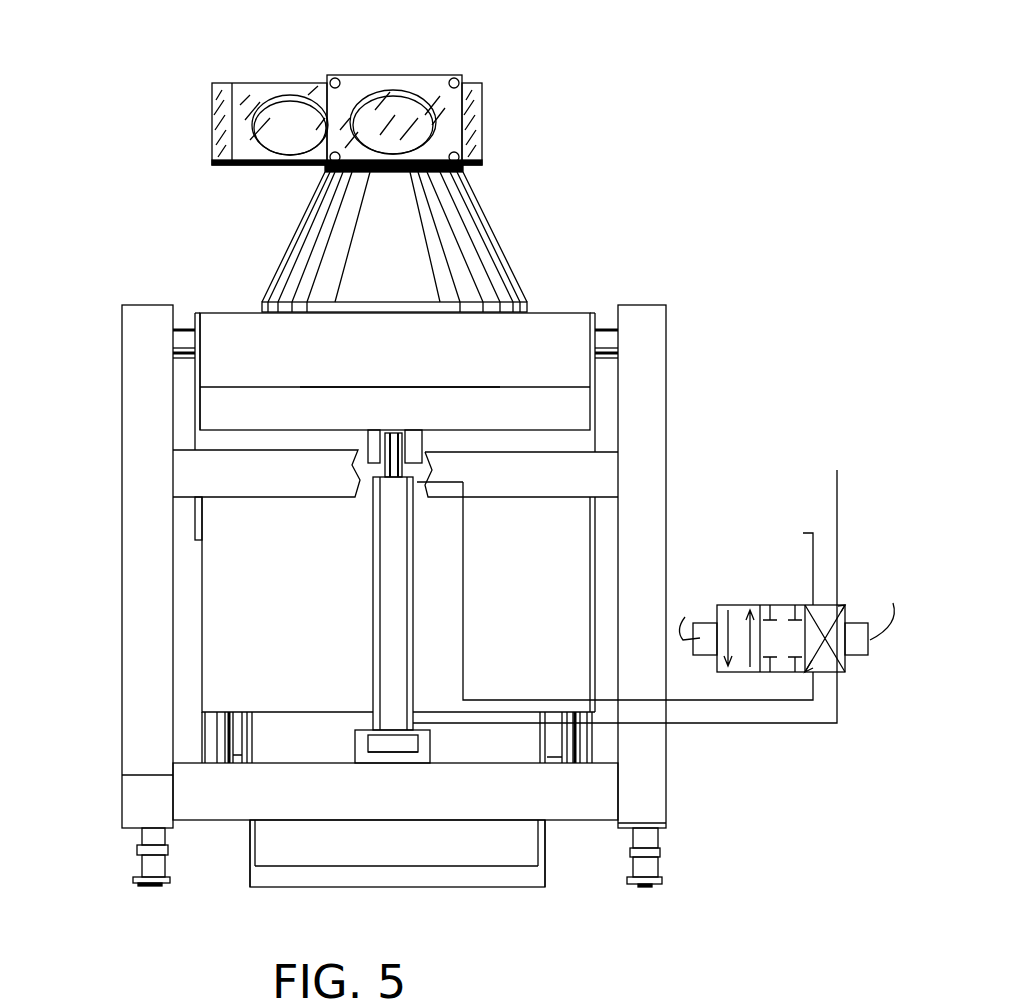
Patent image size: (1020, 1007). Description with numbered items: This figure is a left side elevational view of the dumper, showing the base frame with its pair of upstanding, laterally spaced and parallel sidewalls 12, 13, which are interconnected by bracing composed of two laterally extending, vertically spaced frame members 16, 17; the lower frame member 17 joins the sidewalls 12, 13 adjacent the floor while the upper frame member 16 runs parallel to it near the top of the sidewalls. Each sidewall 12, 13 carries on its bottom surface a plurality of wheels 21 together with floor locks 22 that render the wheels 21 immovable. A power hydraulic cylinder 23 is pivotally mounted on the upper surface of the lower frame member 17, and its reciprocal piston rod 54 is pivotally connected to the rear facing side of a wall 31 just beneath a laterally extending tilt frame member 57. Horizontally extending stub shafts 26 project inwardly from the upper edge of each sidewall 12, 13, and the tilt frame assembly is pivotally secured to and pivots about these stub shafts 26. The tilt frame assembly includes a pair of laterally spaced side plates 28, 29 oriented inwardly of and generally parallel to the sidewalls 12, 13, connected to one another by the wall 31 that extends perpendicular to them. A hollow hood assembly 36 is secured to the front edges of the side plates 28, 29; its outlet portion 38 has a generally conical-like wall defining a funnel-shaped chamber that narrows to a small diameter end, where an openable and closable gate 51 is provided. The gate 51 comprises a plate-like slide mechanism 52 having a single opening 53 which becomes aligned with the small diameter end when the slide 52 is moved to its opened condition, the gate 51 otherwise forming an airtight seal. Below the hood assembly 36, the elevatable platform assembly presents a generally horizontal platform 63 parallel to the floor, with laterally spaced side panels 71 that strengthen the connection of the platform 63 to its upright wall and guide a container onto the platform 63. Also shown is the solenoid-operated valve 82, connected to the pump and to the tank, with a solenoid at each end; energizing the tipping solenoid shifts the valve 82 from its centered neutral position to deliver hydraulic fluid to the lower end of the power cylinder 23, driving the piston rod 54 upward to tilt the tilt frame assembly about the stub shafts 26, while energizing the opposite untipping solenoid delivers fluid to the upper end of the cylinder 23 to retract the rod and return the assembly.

The sidewall 12 is at (125, 650).
The sidewall 13 is at (650, 548).
The frame member 16 is at (600, 462).
The frame member 17 is at (605, 787).
The wheels 21 is at (152, 890).
The floor locks 22 is at (148, 870).
The power hydraulic cylinder 23 is at (385, 625).
The stub shafts 26 is at (186, 340).
The side plate 28 is at (595, 398).
The side plate 29 is at (195, 382).
The wall 31 is at (395, 630).
The hood assembly 36 is at (508, 258).
The outlet portion 38 is at (470, 222).
The gate 51 is at (389, 75).
The slide mechanism 52 is at (242, 85).
The opening 53 is at (292, 100).
The piston rod 54 is at (360, 468).
The tilt frame member 57 is at (540, 402).
The platform 63 is at (458, 890).
The side panels 71 is at (250, 845).
The valve 82 is at (784, 600).